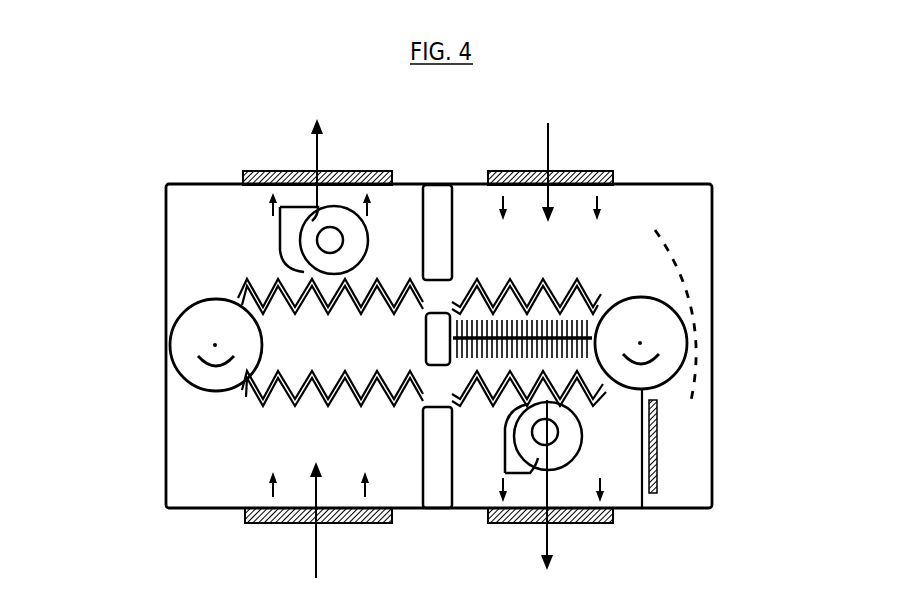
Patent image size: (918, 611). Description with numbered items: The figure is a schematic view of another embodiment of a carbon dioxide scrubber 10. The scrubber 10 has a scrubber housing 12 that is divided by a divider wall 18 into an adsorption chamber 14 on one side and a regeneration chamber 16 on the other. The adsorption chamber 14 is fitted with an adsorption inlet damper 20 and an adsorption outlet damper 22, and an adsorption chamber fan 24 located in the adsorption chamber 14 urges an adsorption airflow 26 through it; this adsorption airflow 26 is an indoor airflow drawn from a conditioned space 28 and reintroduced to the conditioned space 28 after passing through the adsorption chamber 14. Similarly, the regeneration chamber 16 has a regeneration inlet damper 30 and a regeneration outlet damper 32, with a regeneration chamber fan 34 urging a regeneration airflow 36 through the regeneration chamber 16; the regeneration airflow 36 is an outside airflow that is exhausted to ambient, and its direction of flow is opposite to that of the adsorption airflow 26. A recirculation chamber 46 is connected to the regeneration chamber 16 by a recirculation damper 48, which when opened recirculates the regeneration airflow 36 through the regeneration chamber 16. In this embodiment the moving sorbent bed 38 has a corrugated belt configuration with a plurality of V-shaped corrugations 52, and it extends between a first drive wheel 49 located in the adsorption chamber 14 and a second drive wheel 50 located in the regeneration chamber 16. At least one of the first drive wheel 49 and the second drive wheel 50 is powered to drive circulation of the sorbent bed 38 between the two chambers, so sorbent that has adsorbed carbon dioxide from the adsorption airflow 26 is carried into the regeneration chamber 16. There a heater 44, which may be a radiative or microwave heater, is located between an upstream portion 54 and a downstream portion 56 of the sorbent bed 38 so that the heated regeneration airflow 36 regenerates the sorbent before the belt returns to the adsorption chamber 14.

The CO2 scrubber 10 is at (88, 112).
The scrubber housing 12 is at (163, 455).
The adsorption chamber 14 is at (385, 447).
The regeneration chamber 16 is at (489, 447).
The divider wall 18 is at (438, 490).
The adsorption inlet damper 20 is at (245, 525).
The adsorption outlet damper 22 is at (392, 175).
The adsorption chamber fan 24 is at (318, 252).
The adsorption airflow 26 is at (320, 153).
The conditioned space 28 is at (255, 141).
The regeneration inlet damper 30 is at (612, 175).
The regeneration outlet damper 32 is at (600, 525).
The regeneration chamber fan 34 is at (541, 459).
The regeneration airflow 36 is at (549, 145).
The sorbent bed 38 is at (398, 292).
The heater 44 is at (575, 325).
The recirculation chamber 46 is at (697, 356).
The recirculation damper 48 is at (656, 496).
The first drive wheel 49 is at (188, 346).
The second drive wheel 50 is at (653, 335).
The corrugations 52 is at (272, 290).
The upstream portion 54 is at (539, 286).
The downstream portion 56 is at (592, 392).